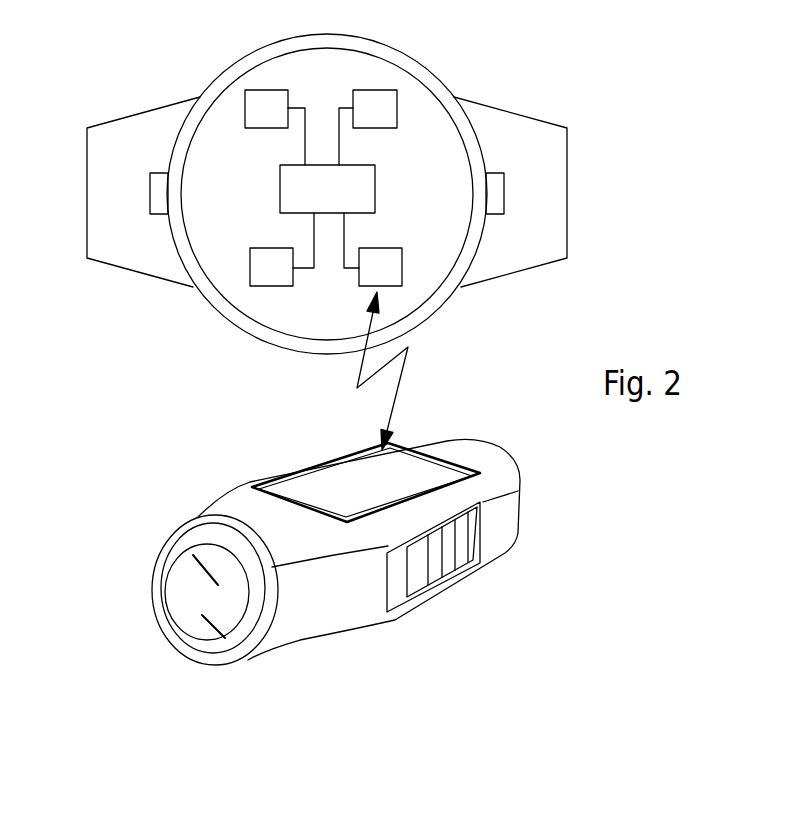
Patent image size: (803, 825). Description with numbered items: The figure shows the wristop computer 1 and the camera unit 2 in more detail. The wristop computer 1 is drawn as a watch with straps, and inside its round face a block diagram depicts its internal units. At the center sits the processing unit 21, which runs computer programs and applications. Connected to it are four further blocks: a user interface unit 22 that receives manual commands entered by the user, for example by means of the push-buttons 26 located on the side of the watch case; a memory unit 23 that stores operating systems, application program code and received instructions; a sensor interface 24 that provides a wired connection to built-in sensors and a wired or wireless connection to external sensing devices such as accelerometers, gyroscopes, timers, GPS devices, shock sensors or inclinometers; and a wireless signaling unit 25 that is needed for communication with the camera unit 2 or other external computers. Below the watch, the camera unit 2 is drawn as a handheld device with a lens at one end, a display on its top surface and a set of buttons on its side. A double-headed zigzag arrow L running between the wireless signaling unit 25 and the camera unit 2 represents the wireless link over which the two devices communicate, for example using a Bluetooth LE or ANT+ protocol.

The wristop computer 1 is at (198, 82).
The camera unit 2 is at (215, 503).
The processing unit 21 is at (343, 202).
The user interface unit 22 is at (275, 127).
The memory unit 23 is at (368, 127).
The sensor interface 24 is at (282, 249).
The wireless signaling unit 25 is at (373, 249).
The push-buttons 26 is at (504, 177).
The wireless link L is at (390, 413).